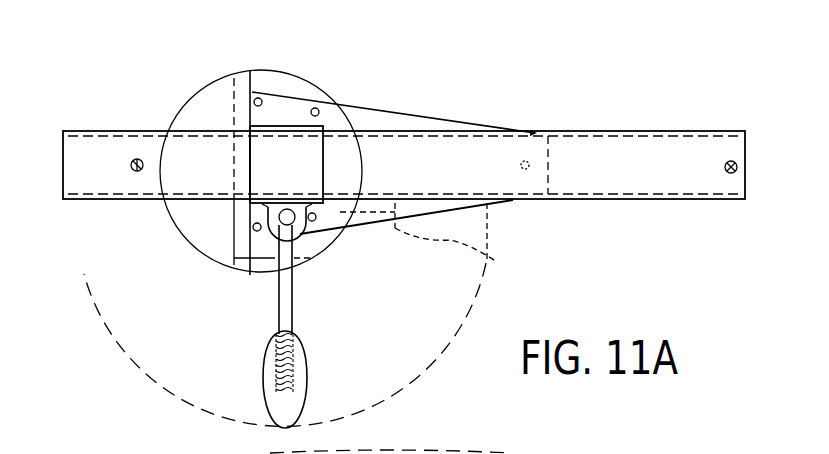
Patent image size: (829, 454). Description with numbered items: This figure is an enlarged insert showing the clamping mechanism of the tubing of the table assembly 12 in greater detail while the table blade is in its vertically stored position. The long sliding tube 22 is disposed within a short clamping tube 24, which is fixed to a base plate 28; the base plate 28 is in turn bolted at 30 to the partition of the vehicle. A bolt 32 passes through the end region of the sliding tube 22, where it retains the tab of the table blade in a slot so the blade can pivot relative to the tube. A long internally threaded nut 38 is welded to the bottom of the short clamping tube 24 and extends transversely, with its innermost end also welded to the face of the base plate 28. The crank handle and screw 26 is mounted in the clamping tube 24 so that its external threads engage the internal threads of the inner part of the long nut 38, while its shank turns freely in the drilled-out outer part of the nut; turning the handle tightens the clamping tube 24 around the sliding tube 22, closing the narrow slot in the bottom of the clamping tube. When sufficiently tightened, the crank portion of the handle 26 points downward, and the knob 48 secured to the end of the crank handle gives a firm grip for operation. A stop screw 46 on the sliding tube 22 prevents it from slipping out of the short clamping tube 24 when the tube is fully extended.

The table assembly 12 is at (646, 52).
The sliding tube 22 is at (618, 201).
The short clamping tube 24 is at (324, 163).
The crank handle and screw 26 is at (278, 304).
The base plate 28 is at (372, 115).
The bolts 30 is at (315, 108).
The bolt 32 is at (137, 158).
The long internally threaded nut 38 is at (266, 213).
The stop screw 46 is at (737, 162).
The knob 48 is at (263, 374).